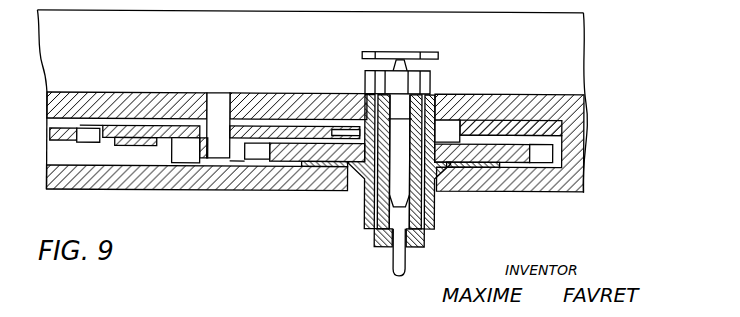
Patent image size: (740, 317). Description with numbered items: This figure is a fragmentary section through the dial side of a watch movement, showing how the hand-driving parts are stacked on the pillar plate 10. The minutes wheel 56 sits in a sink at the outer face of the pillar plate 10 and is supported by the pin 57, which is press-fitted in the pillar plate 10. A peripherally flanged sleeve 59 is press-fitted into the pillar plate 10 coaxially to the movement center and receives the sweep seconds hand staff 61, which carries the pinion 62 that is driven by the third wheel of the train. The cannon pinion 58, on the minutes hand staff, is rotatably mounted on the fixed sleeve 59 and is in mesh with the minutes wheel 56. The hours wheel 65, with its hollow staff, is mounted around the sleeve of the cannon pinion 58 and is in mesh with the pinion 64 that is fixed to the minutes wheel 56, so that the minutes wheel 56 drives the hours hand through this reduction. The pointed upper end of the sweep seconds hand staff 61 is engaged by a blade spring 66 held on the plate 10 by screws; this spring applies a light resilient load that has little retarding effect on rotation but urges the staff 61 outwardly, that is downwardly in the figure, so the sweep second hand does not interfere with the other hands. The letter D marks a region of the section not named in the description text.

The pillar plate 10 is at (280, 92).
The minutes wheel 56 is at (153, 128).
The pin 57 is at (219, 103).
The cannon pinion 58 is at (455, 118).
The peripherally flanged sleeve 59 is at (446, 130).
The sweep seconds hand staff 61 is at (401, 263).
The pinion 62 is at (368, 76).
The pinion 64 is at (188, 153).
The hours wheel 65 is at (538, 160).
The blade spring 66 is at (429, 50).
The damping member D is at (285, 183).